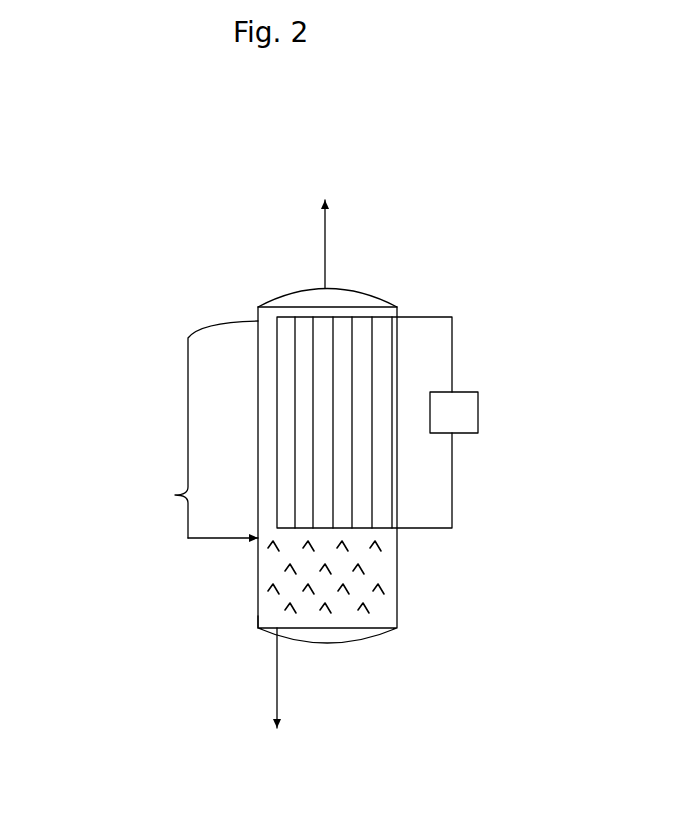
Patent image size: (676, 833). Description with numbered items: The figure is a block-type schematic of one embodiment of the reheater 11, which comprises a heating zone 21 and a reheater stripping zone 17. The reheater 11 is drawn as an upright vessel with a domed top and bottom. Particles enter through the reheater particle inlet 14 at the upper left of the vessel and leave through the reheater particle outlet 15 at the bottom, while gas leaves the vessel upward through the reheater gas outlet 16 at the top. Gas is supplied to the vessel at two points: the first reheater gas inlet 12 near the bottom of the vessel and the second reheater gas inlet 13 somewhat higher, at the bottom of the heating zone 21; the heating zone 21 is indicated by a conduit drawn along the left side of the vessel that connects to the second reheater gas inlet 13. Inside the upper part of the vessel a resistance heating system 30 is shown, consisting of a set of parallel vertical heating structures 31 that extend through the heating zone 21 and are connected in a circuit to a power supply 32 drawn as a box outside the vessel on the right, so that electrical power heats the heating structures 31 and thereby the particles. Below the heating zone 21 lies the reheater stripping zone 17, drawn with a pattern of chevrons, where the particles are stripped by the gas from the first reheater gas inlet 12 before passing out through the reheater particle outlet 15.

The reheater 11 is at (393, 293).
The first reheater gas inlet 12 is at (258, 623).
The second reheater gas inlet 13 is at (250, 542).
The reheater particle inlet 14 is at (257, 312).
The reheater particle outlet 15 is at (281, 703).
The reheater gas outlet 16 is at (336, 224).
The reheater stripping zone 17 is at (383, 602).
The heating zone 21 is at (175, 495).
The resistance heating system 30 is at (267, 365).
The heating structure 31 is at (385, 510).
The power supply 32 is at (468, 413).